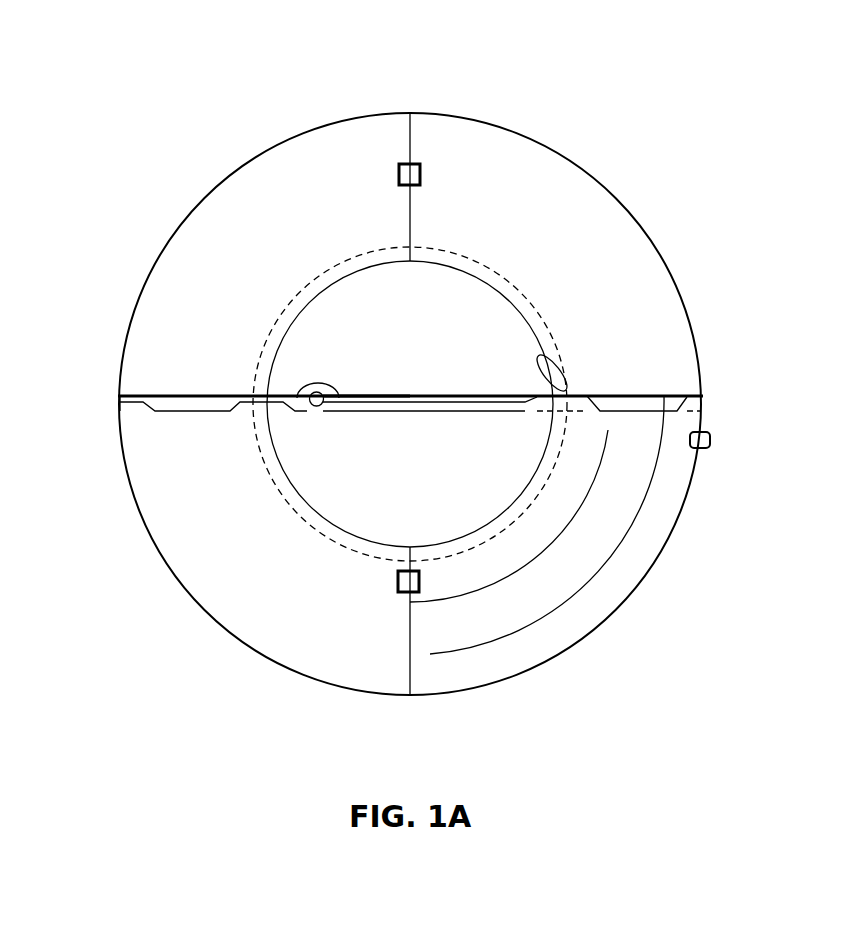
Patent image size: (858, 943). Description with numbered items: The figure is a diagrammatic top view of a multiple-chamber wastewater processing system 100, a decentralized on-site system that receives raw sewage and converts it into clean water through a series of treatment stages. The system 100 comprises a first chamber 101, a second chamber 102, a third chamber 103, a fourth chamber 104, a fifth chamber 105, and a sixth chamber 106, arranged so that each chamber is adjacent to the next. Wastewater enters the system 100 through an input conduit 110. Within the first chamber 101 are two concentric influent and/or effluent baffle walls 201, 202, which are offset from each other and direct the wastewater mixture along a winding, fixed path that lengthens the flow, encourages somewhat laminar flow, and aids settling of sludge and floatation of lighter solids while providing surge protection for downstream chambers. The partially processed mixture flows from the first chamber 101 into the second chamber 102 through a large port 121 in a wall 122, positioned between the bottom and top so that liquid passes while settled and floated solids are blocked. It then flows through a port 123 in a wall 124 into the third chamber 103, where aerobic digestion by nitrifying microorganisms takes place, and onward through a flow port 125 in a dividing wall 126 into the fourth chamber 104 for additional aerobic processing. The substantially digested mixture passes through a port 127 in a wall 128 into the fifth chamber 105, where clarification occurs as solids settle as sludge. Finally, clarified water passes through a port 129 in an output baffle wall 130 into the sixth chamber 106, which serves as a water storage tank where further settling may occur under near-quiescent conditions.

The multiple-chamber wastewater processing system 100 is at (667, 65).
The first chamber 101 is at (633, 592).
The second chamber 102 is at (249, 575).
The third chamber 103 is at (249, 253).
The fourth chamber 104 is at (527, 253).
The fifth chamber 105 is at (434, 330).
The sixth chamber 106 is at (397, 482).
The input conduit 110 is at (710, 447).
The port 121 is at (397, 588).
The wall 122 is at (410, 683).
The port 123 is at (190, 394).
The wall 124 is at (127, 395).
The flow port 125 is at (398, 166).
The dividing wall 126 is at (409, 137).
The port 127 is at (563, 370).
The wall 128 is at (537, 320).
The port 129 is at (319, 393).
The output baffle wall 130 is at (373, 395).
The concentric influent and/or effluent baffle wall 201 is at (538, 621).
The concentric influent and/or effluent baffle wall 202 is at (447, 598).